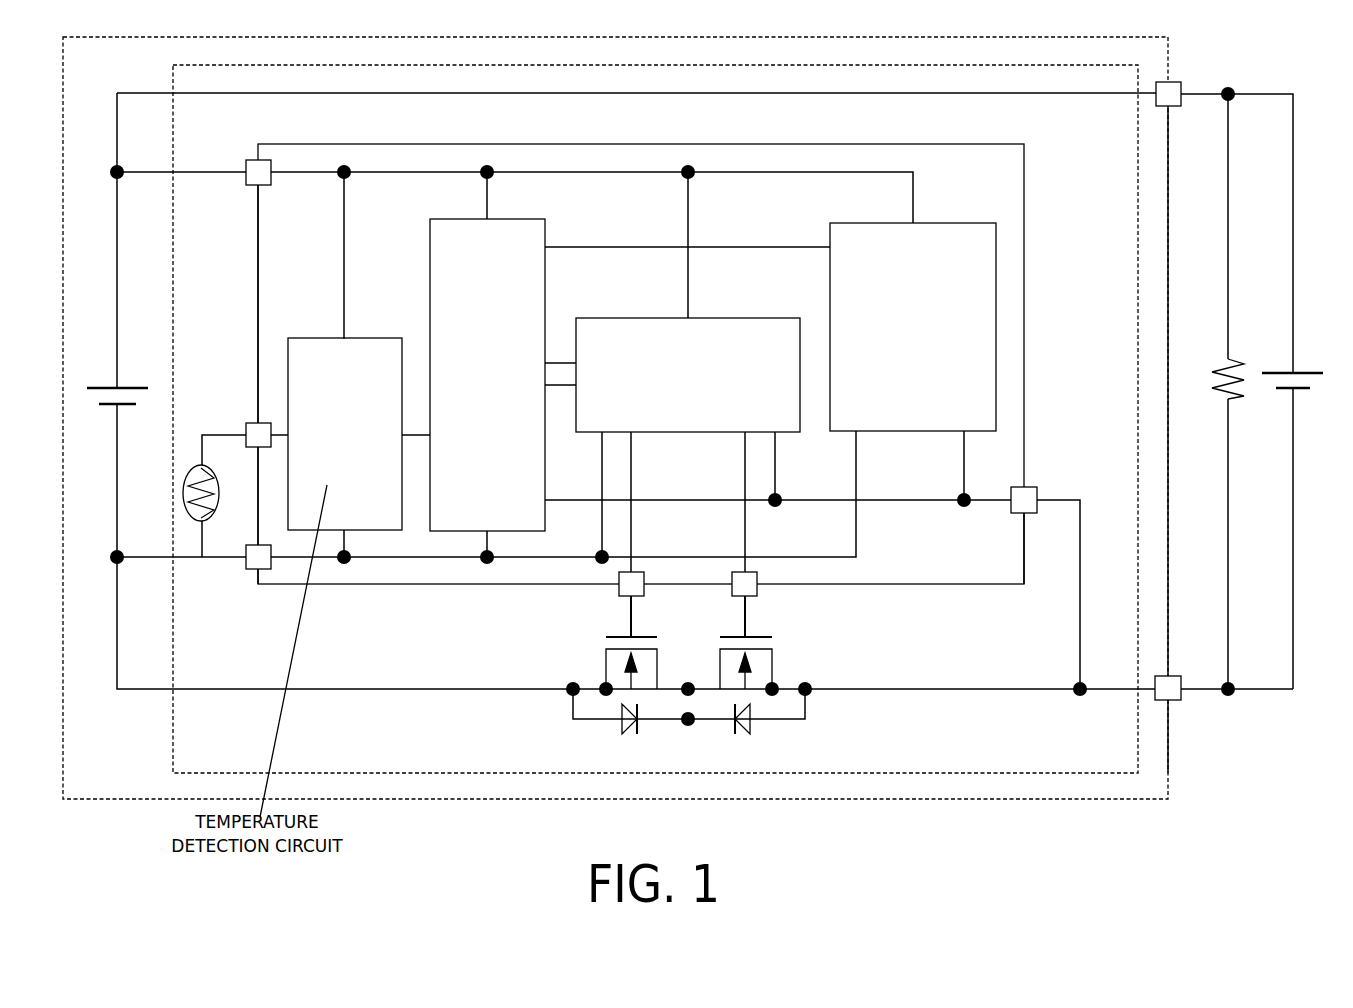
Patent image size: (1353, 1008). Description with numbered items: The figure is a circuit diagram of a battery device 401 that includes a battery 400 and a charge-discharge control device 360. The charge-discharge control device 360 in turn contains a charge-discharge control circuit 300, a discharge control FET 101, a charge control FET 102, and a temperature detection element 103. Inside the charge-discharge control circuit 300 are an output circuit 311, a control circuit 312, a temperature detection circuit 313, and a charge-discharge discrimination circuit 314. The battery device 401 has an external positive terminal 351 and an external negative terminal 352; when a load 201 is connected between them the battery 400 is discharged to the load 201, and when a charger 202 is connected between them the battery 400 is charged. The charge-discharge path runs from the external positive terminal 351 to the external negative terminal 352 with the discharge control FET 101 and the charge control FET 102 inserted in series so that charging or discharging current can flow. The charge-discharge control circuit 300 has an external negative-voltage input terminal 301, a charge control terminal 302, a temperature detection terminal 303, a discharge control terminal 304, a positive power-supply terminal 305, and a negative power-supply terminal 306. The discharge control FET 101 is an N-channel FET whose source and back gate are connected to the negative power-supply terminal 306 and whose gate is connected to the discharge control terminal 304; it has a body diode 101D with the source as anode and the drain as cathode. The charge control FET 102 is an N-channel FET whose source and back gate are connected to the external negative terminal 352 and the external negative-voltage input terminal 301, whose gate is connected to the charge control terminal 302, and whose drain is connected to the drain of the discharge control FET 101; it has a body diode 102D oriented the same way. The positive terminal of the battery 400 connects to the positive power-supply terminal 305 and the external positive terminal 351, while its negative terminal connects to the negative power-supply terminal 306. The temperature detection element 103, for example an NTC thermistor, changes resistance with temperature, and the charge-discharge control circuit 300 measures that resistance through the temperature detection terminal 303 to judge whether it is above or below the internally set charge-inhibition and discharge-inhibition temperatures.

The battery device 401 is at (1053, 37).
The charge-discharge control device 360 is at (173, 733).
The charge-discharge control circuit 300 is at (958, 144).
The external positive terminal 351 is at (1176, 82).
The external negative terminal 352 is at (1181, 702).
The positive power-supply terminal 305 is at (252, 187).
The temperature detection terminal 303 is at (250, 422).
The negative power-supply terminal 306 is at (252, 571).
The external negative-voltage input terminal 301 is at (1033, 486).
The charge control terminal 302 is at (757, 598).
The discharge control terminal 304 is at (619, 598).
The control circuit 312 is at (525, 219).
The output circuit 311 is at (733, 318).
The temperature detection circuit 313 is at (357, 338).
The charge-discharge discrimination circuit 314 is at (935, 223).
The battery 400 is at (108, 384).
The temperature detection element 103 is at (219, 500).
The load 201 is at (1262, 350).
The charger 202 is at (1300, 370).
The discharge control FET 101 is at (606, 668).
The charge control FET 102 is at (772, 668).
The body diode 101D is at (620, 728).
The body diode 102D is at (752, 728).